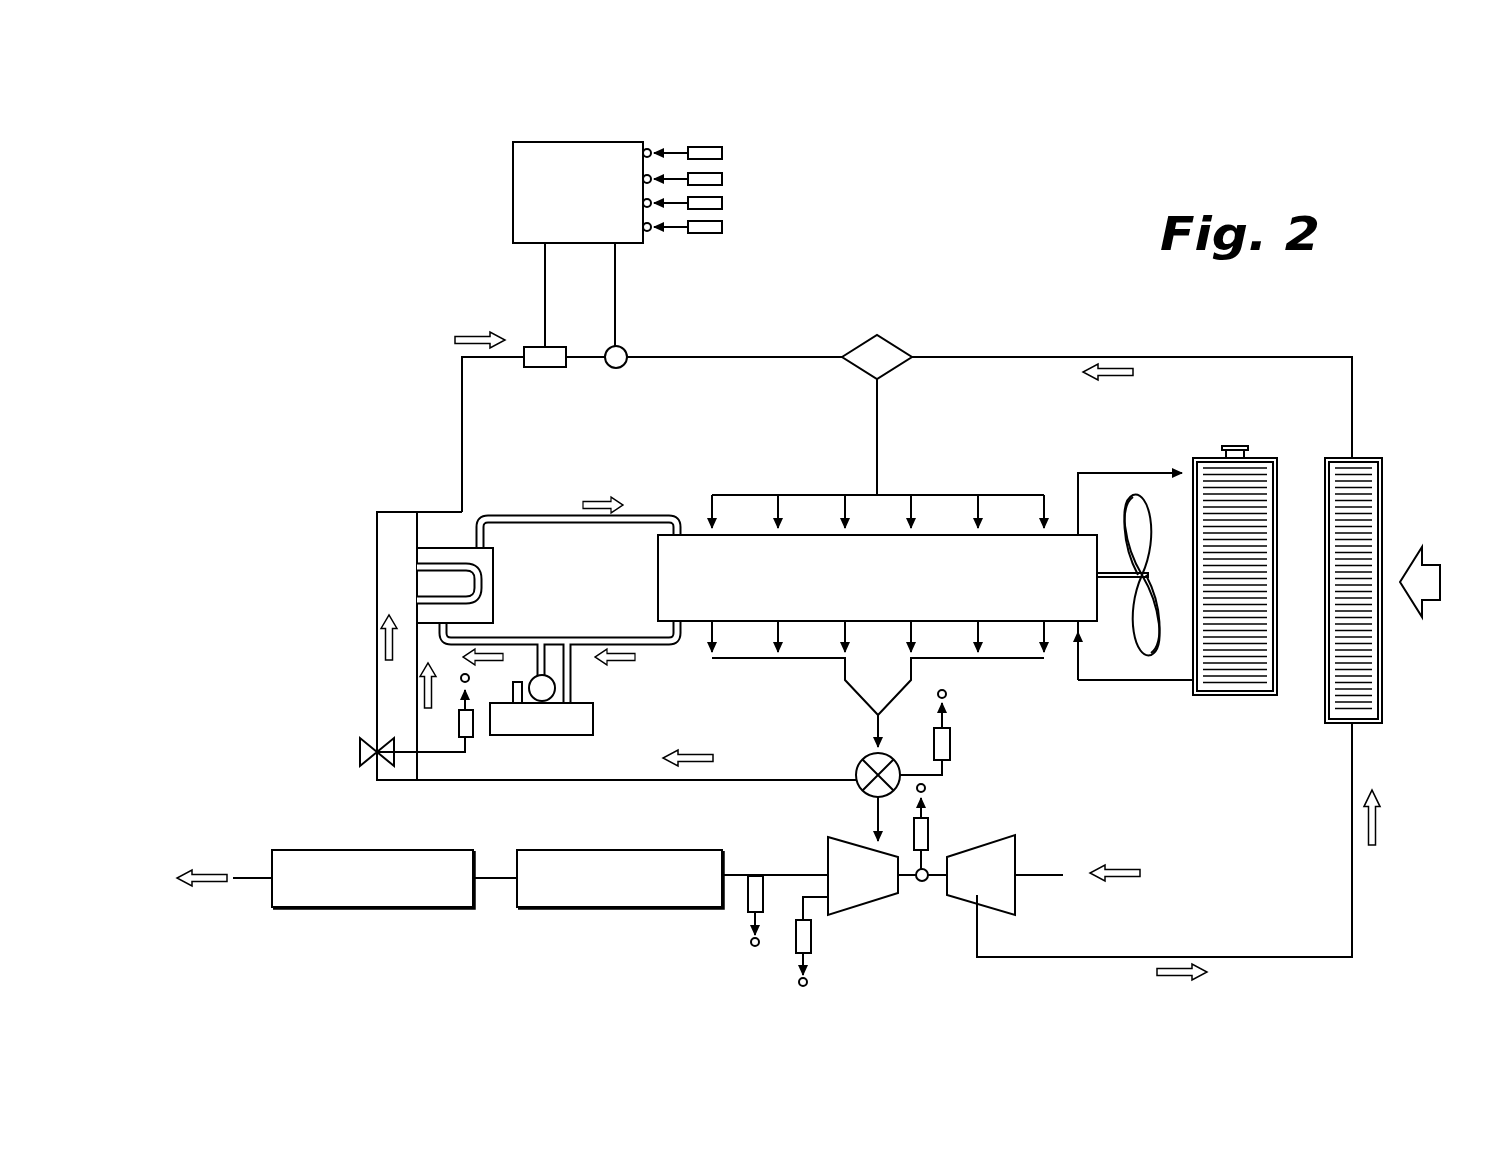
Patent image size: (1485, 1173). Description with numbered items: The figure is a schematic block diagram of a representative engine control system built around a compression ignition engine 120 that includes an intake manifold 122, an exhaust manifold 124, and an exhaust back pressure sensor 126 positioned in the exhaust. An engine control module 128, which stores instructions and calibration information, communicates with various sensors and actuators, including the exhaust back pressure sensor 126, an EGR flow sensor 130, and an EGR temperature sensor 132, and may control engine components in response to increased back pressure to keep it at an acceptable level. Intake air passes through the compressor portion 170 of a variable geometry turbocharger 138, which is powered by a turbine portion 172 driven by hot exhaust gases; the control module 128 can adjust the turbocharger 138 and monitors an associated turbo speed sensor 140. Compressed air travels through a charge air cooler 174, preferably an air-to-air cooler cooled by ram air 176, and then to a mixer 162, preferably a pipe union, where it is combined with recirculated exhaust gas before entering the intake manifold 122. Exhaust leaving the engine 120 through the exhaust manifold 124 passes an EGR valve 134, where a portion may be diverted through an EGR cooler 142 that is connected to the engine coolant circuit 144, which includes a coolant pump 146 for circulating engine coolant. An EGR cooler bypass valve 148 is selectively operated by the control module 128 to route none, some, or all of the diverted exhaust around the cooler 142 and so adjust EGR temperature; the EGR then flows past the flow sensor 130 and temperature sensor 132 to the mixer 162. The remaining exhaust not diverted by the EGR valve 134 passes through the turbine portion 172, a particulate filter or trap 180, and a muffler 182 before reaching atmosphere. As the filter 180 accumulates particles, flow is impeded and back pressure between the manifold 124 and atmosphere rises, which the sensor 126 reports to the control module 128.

The engine 120 is at (1063, 534).
The intake manifold 122 is at (945, 495).
The exhaust manifold 124 is at (1007, 660).
The exhaust back pressure sensor (EBS) 126 is at (778, 875).
The engine control module (ECM) 128 is at (513, 162).
The EGR flow sensor 130 is at (550, 368).
The EGR temperature sensor 132 is at (615, 370).
The EGR valve 134 is at (862, 760).
The variable geometry turbocharger (VGT) 138 is at (916, 903).
The turbo speed sensor 140 is at (932, 830).
The EGR cooler 142 is at (493, 575).
The engine coolant circuit 144 is at (535, 508).
The coolant pump 146 is at (543, 698).
The EGR cooler bypass valve (BPV) 148 is at (388, 765).
The mixer 162 is at (890, 340).
The compressor portion 170 is at (1034, 850).
The turbine portion 172 is at (846, 822).
The charge air cooler 174 is at (1383, 474).
The ram air 176 is at (1404, 527).
The particulate filter/trap 180 is at (627, 908).
The muffler 182 is at (380, 908).